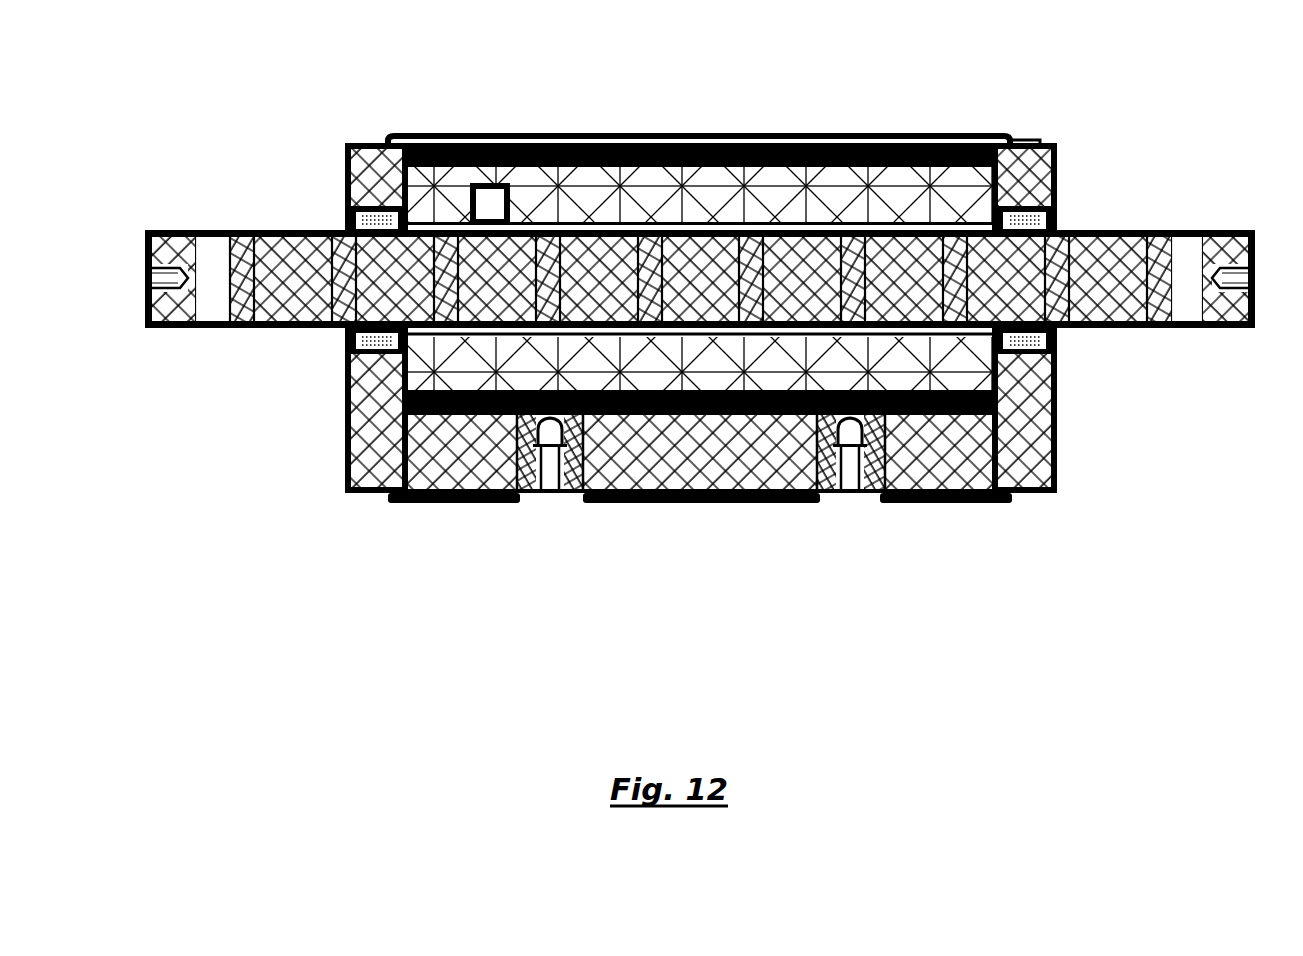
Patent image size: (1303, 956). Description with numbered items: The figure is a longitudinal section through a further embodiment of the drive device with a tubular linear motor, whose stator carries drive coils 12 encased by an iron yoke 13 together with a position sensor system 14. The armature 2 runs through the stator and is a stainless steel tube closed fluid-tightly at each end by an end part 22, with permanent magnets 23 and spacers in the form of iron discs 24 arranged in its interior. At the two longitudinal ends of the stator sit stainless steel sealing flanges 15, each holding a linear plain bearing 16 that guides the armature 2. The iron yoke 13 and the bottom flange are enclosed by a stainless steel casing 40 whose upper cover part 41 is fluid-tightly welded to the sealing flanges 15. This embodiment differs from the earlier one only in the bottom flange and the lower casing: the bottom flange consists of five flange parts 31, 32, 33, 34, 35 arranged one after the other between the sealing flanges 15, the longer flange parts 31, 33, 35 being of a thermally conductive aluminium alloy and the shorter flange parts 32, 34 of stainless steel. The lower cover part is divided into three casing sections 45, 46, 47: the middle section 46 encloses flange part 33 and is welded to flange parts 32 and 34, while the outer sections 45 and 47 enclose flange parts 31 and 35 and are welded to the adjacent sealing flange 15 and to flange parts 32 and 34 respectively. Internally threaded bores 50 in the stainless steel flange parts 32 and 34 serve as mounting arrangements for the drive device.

The armature 2 is at (1188, 230).
The drive coils 12 is at (538, 186).
The iron yoke 13 is at (622, 143).
The position sensor system 14 is at (472, 190).
The sealing flanges 15 is at (350, 410).
The linear plain bearing 16 is at (345, 220).
The end part 22 is at (172, 237).
The permanent magnets 23 is at (291, 323).
The iron discs 24 is at (1160, 324).
The flange part 31 is at (470, 482).
The flange part 32 is at (528, 482).
The flange part 33 is at (628, 482).
The flange part 34 is at (830, 482).
The flange part 35 is at (920, 486).
The casing 40 is at (757, 133).
The upper cover part 41 is at (868, 135).
The casing section 45 is at (440, 502).
The casing section 46 is at (690, 502).
The casing section 47 is at (960, 503).
The bores 50 is at (550, 483).